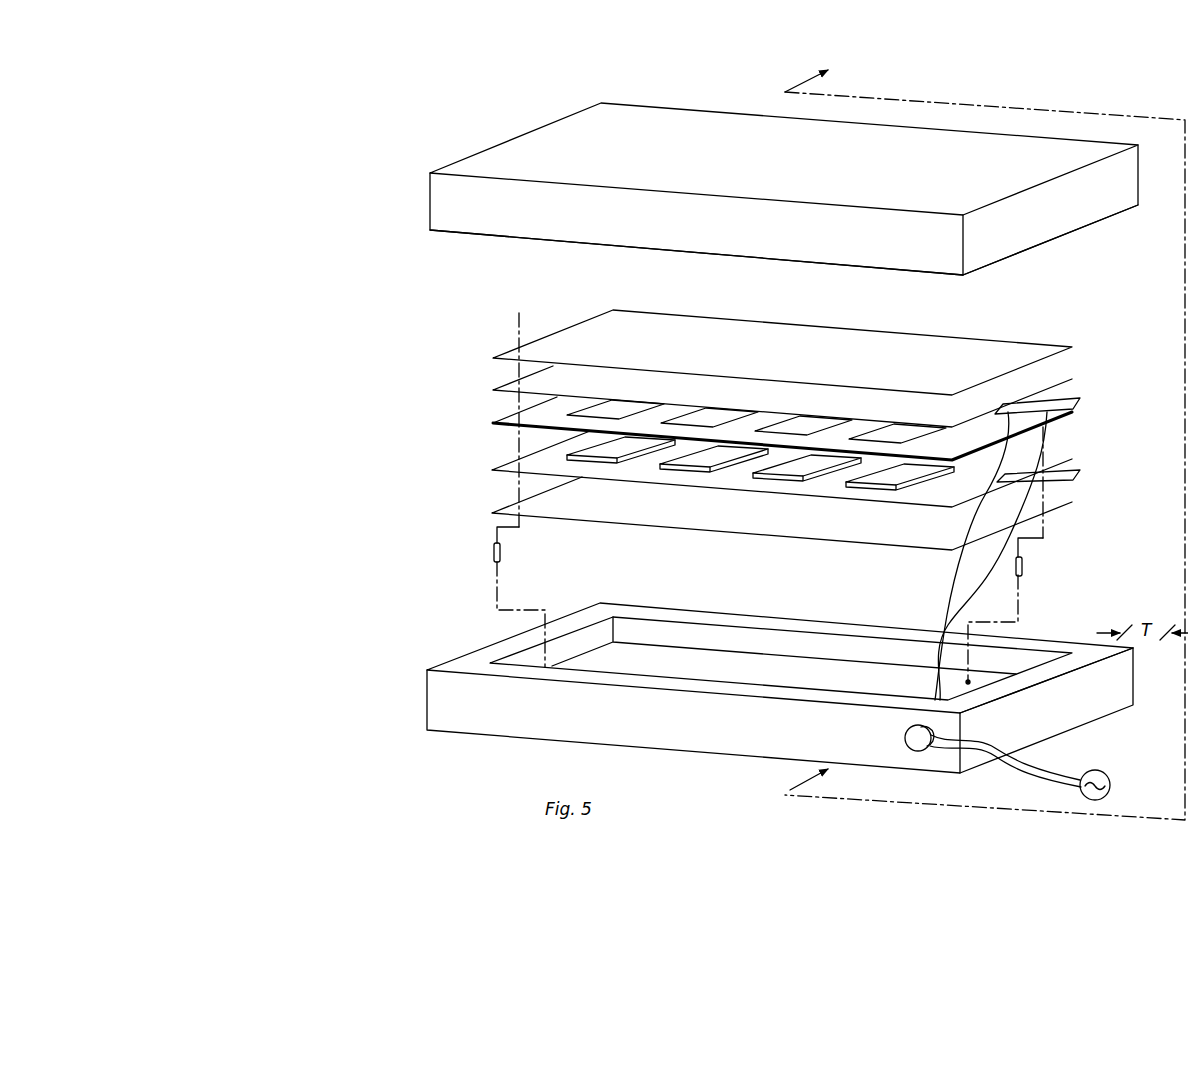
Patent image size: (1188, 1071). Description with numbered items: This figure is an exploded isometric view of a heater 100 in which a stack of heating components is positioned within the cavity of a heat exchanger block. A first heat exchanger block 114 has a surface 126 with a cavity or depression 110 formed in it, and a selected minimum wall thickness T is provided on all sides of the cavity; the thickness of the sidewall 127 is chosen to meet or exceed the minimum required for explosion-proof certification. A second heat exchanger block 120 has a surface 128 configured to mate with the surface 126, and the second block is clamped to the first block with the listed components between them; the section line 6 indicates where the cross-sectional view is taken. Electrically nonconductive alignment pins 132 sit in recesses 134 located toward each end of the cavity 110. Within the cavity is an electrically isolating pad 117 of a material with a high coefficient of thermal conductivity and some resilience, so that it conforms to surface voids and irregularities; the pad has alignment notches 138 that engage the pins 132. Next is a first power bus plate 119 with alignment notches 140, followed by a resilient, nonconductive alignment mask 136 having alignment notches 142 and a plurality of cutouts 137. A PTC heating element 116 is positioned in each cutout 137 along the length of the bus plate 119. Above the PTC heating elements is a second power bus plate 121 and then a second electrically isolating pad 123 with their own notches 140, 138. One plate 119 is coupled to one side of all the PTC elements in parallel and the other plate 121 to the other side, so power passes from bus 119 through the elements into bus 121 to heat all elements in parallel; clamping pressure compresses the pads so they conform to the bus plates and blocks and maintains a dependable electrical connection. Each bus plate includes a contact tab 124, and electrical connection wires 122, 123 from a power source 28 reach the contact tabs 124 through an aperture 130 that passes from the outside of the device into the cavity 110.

The section line 6— 6 is at (970, 445).
The heater 100 is at (338, 116).
The second heat exchanger block 120 is at (556, 130).
The surface 128 is at (470, 237).
The alignment notches 138 is at (519, 346).
The alignment notches 140 is at (519, 380).
The alignment notches 142 is at (519, 410).
The cutouts 137 is at (603, 416).
The PTC heating element 116 is at (610, 453).
The second electrically isolating pad 123 is at (1050, 766).
The second power bus plate 121 is at (942, 411).
The alignment mask 136 is at (942, 442).
The first power bus plate 119 is at (942, 487).
The electrically isolating pad 117 is at (565, 550).
The contact tab 124 is at (1000, 407).
The electrical connection wire 122 is at (962, 581).
The alignment pins 132 is at (491, 552).
The first heat exchanger block 114 is at (450, 707).
The surface 126 is at (475, 660).
The cavity 110 is at (648, 658).
The sidewall 127 is at (1085, 672).
The recesses 134 is at (964, 682).
The aperture 130 is at (911, 743).
The power source 28 is at (1110, 775).